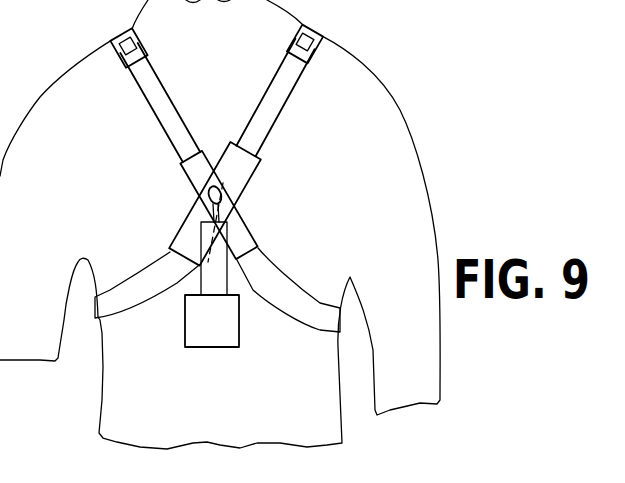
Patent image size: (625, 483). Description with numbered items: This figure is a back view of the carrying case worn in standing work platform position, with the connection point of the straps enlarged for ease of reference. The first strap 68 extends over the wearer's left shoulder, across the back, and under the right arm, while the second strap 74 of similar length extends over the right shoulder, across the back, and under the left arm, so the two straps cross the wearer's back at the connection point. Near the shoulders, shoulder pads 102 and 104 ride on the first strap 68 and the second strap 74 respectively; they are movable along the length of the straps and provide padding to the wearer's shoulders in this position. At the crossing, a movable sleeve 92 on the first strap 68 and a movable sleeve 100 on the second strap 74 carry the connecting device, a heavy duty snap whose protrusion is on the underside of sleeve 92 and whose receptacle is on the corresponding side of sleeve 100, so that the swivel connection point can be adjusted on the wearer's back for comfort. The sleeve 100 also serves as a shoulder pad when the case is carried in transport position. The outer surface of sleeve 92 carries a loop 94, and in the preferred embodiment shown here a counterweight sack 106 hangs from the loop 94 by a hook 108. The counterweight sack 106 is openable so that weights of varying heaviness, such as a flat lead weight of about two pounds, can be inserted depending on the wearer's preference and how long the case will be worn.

The first strap 68 is at (157, 105).
The second strap 74 is at (282, 100).
The sleeve 92 is at (245, 237).
The loop 94 is at (200, 197).
The sleeve 100 is at (230, 143).
The shoulder pad 102 is at (113, 43).
The shoulder pad 104 is at (318, 43).
The counterweight sack 106 is at (228, 333).
The hook 108 is at (232, 211).